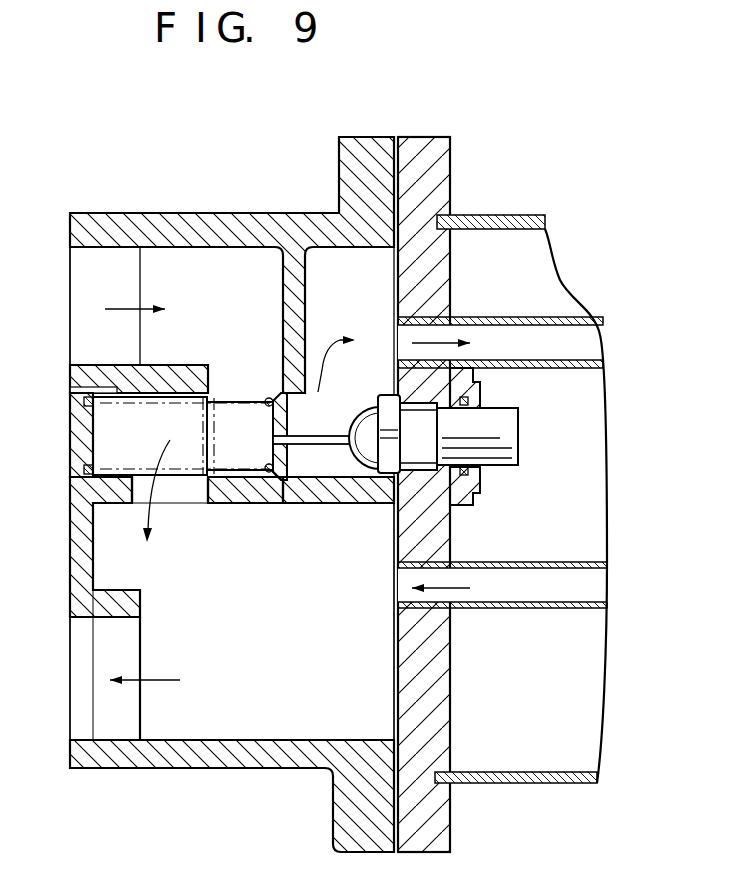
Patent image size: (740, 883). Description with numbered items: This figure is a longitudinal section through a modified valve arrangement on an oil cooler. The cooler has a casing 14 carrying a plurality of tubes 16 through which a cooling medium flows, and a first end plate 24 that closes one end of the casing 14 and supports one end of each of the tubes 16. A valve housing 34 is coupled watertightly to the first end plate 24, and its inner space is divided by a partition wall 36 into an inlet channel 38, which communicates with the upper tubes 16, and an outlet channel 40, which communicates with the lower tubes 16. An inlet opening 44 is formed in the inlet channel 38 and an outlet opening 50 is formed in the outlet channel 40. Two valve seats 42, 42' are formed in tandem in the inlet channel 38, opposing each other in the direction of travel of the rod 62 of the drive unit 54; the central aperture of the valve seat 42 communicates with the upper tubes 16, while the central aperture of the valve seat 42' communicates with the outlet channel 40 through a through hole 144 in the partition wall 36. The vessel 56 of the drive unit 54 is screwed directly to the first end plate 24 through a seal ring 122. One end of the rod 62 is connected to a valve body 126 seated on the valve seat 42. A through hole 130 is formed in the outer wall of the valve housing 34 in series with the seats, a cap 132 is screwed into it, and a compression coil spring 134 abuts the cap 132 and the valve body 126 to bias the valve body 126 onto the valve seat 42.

The casing 14 is at (488, 222).
The tubes 16 is at (512, 320).
The first end plate 24 is at (430, 147).
The valve housing 34 is at (245, 222).
The partition wall 36 is at (357, 497).
The inlet channel 38 is at (172, 256).
The outlet channel 40 is at (250, 733).
The valve seat 42 is at (268, 509).
The valve seat 42' is at (252, 464).
The inlet opening 44 is at (97, 250).
The outlet opening 50 is at (112, 740).
The drive unit 54 is at (466, 434).
The vessel 56 is at (510, 446).
The rod 62 is at (328, 440).
The seal ring 122 is at (470, 399).
The valve body 126 is at (282, 456).
The through hole 130 is at (113, 476).
The cap 132 is at (78, 410).
The compression coil spring 134 is at (84, 456).
The through hole 144 is at (205, 488).